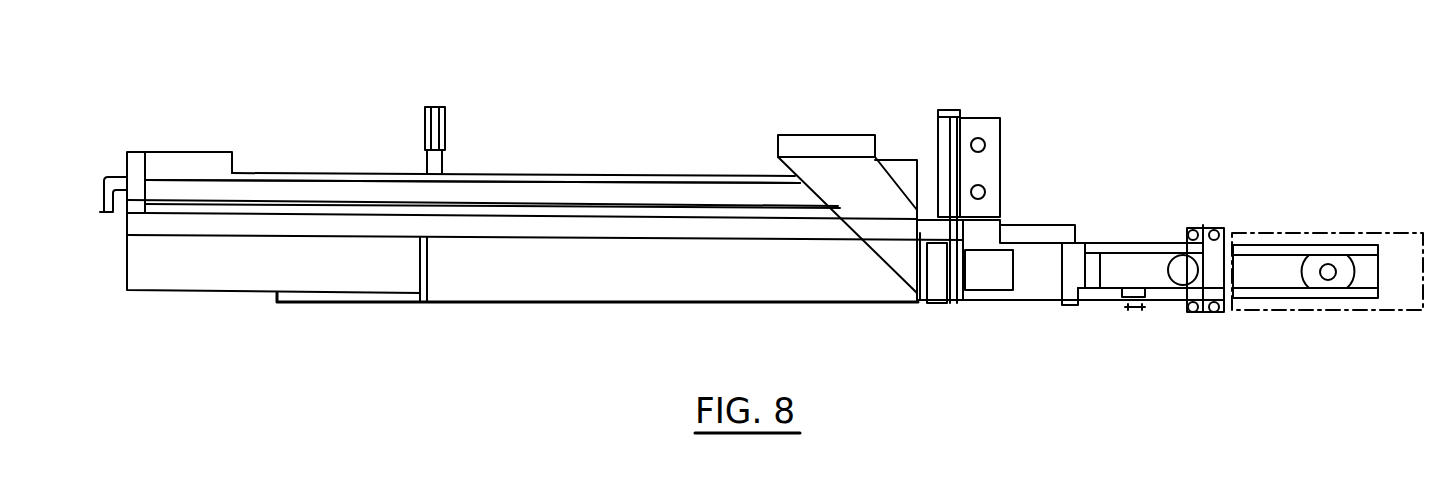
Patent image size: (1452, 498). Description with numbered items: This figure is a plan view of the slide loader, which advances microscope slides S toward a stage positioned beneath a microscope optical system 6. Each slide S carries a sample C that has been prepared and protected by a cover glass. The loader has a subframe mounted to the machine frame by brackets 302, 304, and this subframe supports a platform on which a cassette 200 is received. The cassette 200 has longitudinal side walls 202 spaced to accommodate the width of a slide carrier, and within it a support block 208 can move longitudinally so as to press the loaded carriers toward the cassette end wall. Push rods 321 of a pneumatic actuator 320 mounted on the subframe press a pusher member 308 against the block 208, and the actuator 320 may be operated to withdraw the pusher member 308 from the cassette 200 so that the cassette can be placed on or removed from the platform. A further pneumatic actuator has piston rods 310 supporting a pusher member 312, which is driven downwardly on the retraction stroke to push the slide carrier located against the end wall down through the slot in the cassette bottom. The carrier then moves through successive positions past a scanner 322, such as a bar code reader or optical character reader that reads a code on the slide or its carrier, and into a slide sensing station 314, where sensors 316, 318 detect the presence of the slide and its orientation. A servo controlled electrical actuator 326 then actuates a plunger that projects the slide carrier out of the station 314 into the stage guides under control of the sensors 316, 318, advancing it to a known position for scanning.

The cassette 200 is at (640, 280).
The longitudinal side walls 202 is at (540, 240).
The support block 208 is at (934, 290).
The bracket 302 is at (433, 108).
The bracket 304 is at (950, 108).
The pusher member 308 is at (813, 134).
The piston rods 310 is at (986, 149).
The pusher member 312 is at (947, 157).
The slide sensing station 314 is at (1150, 262).
The sensor 316 is at (1134, 314).
The sensor 318 is at (1193, 235).
The pneumatic actuator 320 is at (568, 192).
The push rods 321 is at (680, 175).
The scanner 322 is at (994, 283).
The servo controlled electrical actuator 326 is at (1050, 290).
The microscope slide S is at (1118, 265).
The sample C is at (1168, 282).
The microscope optical system 6 is at (1304, 266).